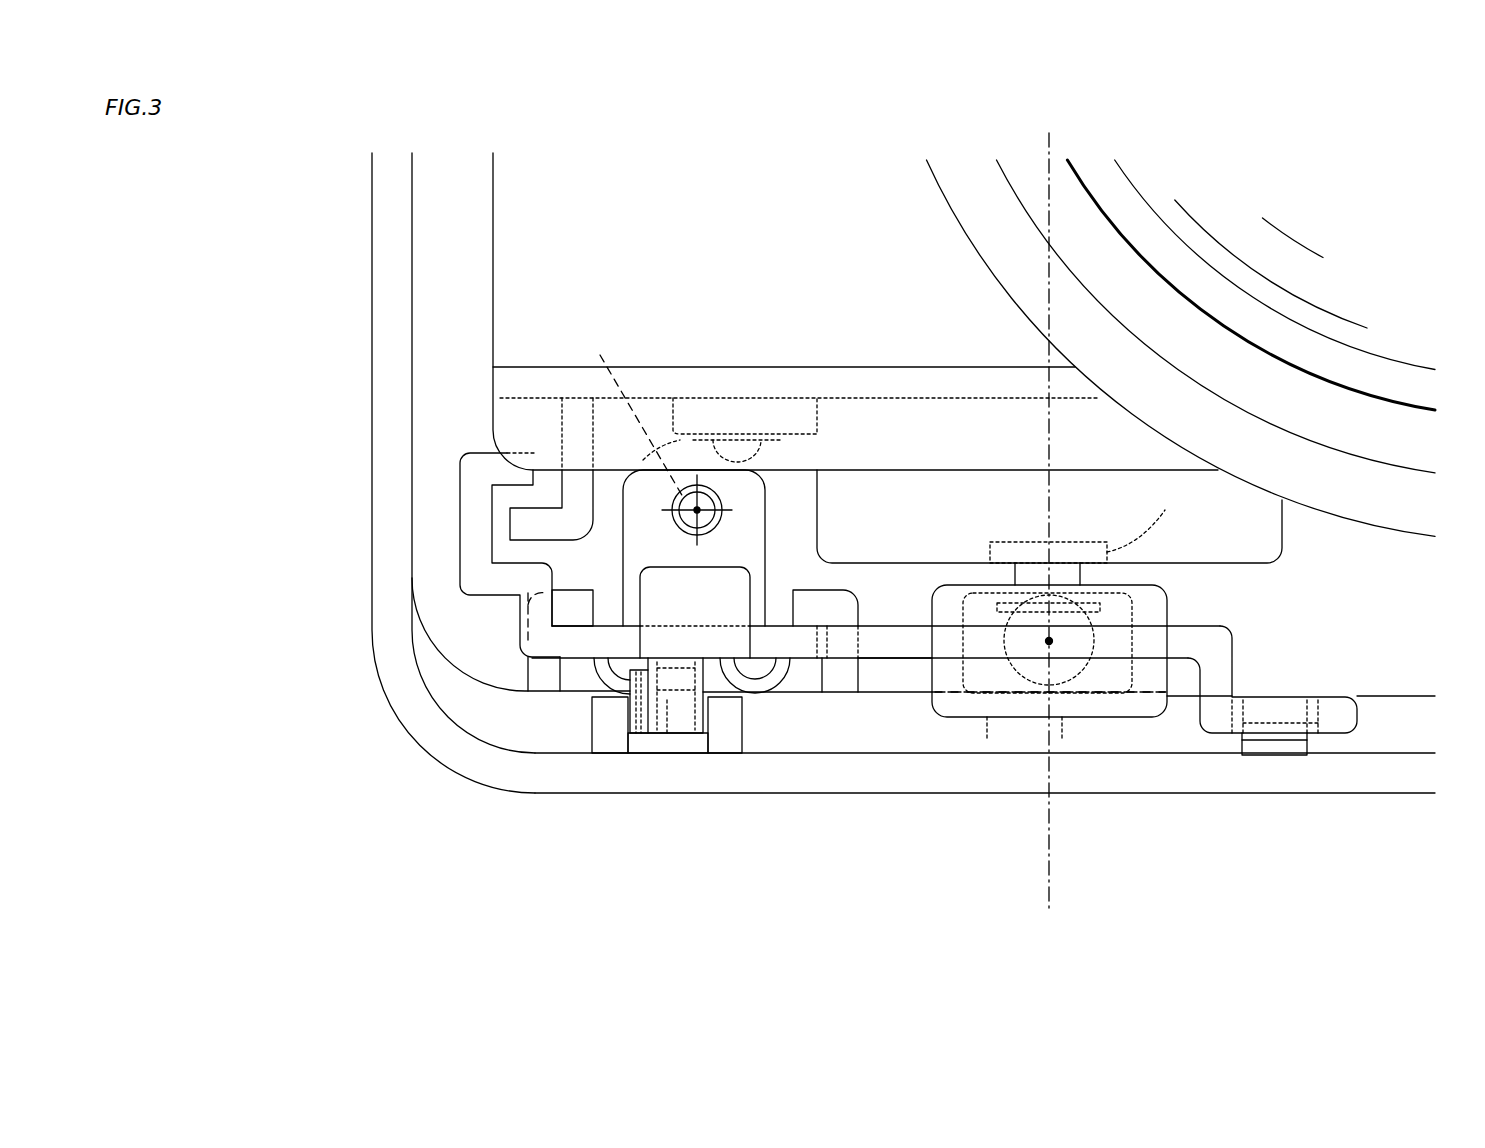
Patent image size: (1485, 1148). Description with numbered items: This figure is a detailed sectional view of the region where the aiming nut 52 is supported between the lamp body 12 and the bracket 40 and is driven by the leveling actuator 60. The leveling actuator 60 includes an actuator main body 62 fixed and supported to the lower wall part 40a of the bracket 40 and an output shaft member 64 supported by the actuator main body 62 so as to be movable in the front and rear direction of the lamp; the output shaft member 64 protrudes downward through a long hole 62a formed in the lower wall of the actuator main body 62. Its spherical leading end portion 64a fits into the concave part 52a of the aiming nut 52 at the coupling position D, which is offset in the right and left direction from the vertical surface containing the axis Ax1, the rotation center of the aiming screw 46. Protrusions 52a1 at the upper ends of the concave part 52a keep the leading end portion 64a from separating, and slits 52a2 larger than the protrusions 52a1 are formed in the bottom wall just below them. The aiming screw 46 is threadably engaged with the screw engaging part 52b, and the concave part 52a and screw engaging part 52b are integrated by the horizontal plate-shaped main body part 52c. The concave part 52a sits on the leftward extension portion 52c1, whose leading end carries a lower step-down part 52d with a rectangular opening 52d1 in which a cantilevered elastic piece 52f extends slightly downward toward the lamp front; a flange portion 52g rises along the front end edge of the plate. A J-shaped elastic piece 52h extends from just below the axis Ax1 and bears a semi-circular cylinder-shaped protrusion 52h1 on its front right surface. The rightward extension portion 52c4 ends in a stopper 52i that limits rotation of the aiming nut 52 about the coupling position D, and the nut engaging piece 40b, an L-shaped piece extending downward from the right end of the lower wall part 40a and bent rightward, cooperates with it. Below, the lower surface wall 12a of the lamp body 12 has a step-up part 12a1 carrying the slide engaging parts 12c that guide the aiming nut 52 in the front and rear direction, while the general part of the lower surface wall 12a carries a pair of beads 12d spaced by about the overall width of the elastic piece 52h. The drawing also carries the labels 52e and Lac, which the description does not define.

The lamp body 12 is at (458, 773).
The lower surface wall 12a is at (1367, 783).
The step-up part 12a1 is at (1380, 710).
The slide engaging parts 12c is at (817, 600).
The beads 12d is at (610, 737).
The bracket 40 is at (493, 233).
The lower wall part 40a is at (760, 367).
The nut engaging piece 40b is at (522, 524).
The aiming screw 46 is at (672, 518).
The aiming nut 52 is at (517, 647).
The concave part 52a is at (985, 597).
The protrusions 52a1 is at (1040, 548).
The slits 52a2 is at (1060, 700).
The screw engaging part 52b is at (752, 487).
The plate-shaped main body part 52c is at (897, 635).
The leftward extension portion 52c1 is at (917, 652).
The rightward extension portion 52c4 is at (590, 643).
The step-down part 52d is at (1290, 712).
The opening 52d1 is at (1237, 733).
The lever bearing portion 52e is at (762, 688).
The elastic piece 52f is at (1282, 748).
The flange portion 52g is at (722, 585).
The elastic piece 52h is at (668, 700).
The semi-circular cylinder-shaped protrusion 52h1 is at (637, 727).
The stopper 52i is at (470, 500).
The leveling actuator 60 is at (1285, 552).
The actuator main body 62 is at (1218, 548).
The long hole 62a is at (1100, 524).
The output shaft member 64 is at (1080, 573).
The leading end portion 64a is at (1013, 718).
The axis Ax1 is at (618, 411).
The actuator axis line Lac is at (1049, 283).
The coupling position D is at (1049, 641).